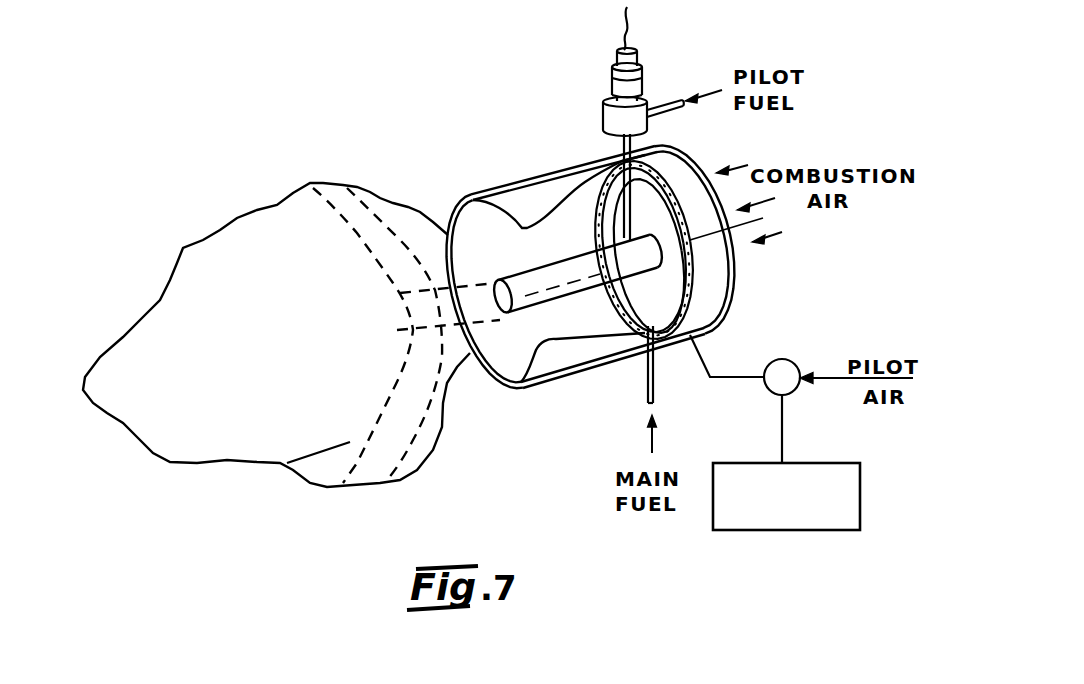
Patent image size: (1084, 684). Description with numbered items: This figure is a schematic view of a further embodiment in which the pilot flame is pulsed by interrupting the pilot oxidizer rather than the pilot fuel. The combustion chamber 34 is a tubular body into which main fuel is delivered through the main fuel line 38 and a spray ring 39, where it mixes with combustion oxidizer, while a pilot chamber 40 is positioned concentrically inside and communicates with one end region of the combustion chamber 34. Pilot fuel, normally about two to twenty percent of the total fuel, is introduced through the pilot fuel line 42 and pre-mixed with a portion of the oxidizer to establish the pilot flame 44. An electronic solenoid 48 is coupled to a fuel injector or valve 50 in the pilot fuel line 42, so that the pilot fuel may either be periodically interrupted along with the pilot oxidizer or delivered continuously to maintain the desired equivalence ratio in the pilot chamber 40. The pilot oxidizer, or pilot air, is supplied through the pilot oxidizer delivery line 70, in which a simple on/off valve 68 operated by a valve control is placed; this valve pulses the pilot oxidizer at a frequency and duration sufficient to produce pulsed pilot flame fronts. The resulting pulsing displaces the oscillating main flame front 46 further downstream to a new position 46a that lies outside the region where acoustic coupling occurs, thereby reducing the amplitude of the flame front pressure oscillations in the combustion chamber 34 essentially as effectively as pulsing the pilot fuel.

The combustion chamber 34 is at (508, 185).
The main fuel line 38 is at (647, 385).
The spray ring 39 is at (693, 270).
The pilot chamber 40 is at (532, 265).
The pilot fuel line 42 is at (658, 100).
The pilot flame 44 is at (397, 313).
The main flame front 46 is at (360, 218).
The displaced main flame front position 46a is at (400, 360).
The electronic solenoid 48 is at (610, 76).
The fuel injector or valve 50 is at (603, 113).
The on/off valve 68 is at (790, 357).
The pilot oxidizer delivery line 70 is at (707, 355).